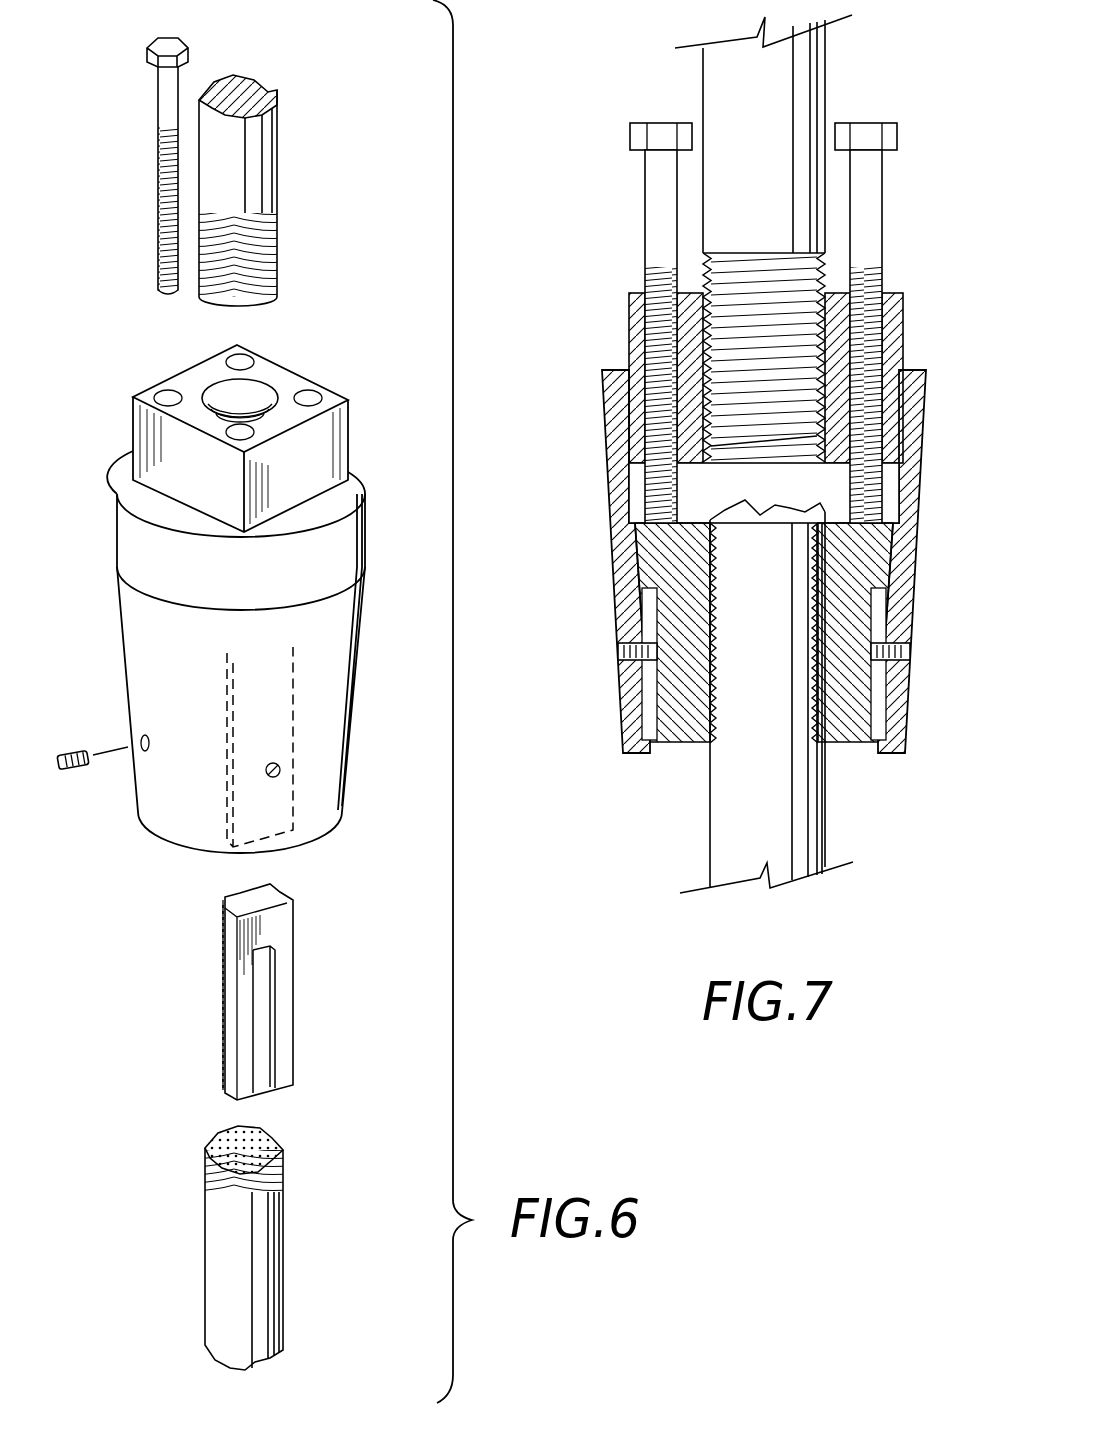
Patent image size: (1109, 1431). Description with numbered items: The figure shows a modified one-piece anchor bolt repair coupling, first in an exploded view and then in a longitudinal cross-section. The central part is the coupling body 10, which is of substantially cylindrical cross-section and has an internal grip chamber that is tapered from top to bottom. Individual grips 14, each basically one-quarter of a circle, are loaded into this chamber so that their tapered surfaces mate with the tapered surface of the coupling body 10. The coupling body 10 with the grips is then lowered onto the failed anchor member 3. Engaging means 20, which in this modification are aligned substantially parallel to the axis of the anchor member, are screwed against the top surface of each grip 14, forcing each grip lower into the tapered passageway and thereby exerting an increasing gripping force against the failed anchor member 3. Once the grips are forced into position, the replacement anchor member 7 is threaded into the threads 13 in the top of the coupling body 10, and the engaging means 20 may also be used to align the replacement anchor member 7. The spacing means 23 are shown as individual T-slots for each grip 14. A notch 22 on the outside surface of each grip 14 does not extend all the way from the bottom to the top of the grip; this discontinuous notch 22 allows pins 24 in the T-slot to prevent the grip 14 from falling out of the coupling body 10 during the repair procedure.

In FIG. 6, the failed anchor member 3 is at (217, 1232).
In FIG. 7, the failed anchor member 3 is at (733, 807).
In FIG. 6, the replacement anchor member 7 is at (267, 167).
In FIG. 7, the replacement anchor member 7 is at (720, 67).
In FIG. 6, the coupling body 10 is at (122, 510).
In FIG. 7, the coupling body 10 is at (764, 523).
In FIG. 6, the threads 13 is at (243, 398).
In FIG. 6, the grip 14 is at (285, 977).
In FIG. 7, the grip 14 is at (670, 556).
In FIG. 6, the engaging means 20 is at (163, 100).
In FIG. 7, the engaging means 20 is at (657, 180).
In FIG. 6, the notch 22 is at (263, 1052).
In FIG. 6, the spacing means 23 is at (293, 807).
In FIG. 6, the pin 24 is at (75, 773).
In FIG. 7, the pin 24 is at (618, 657).